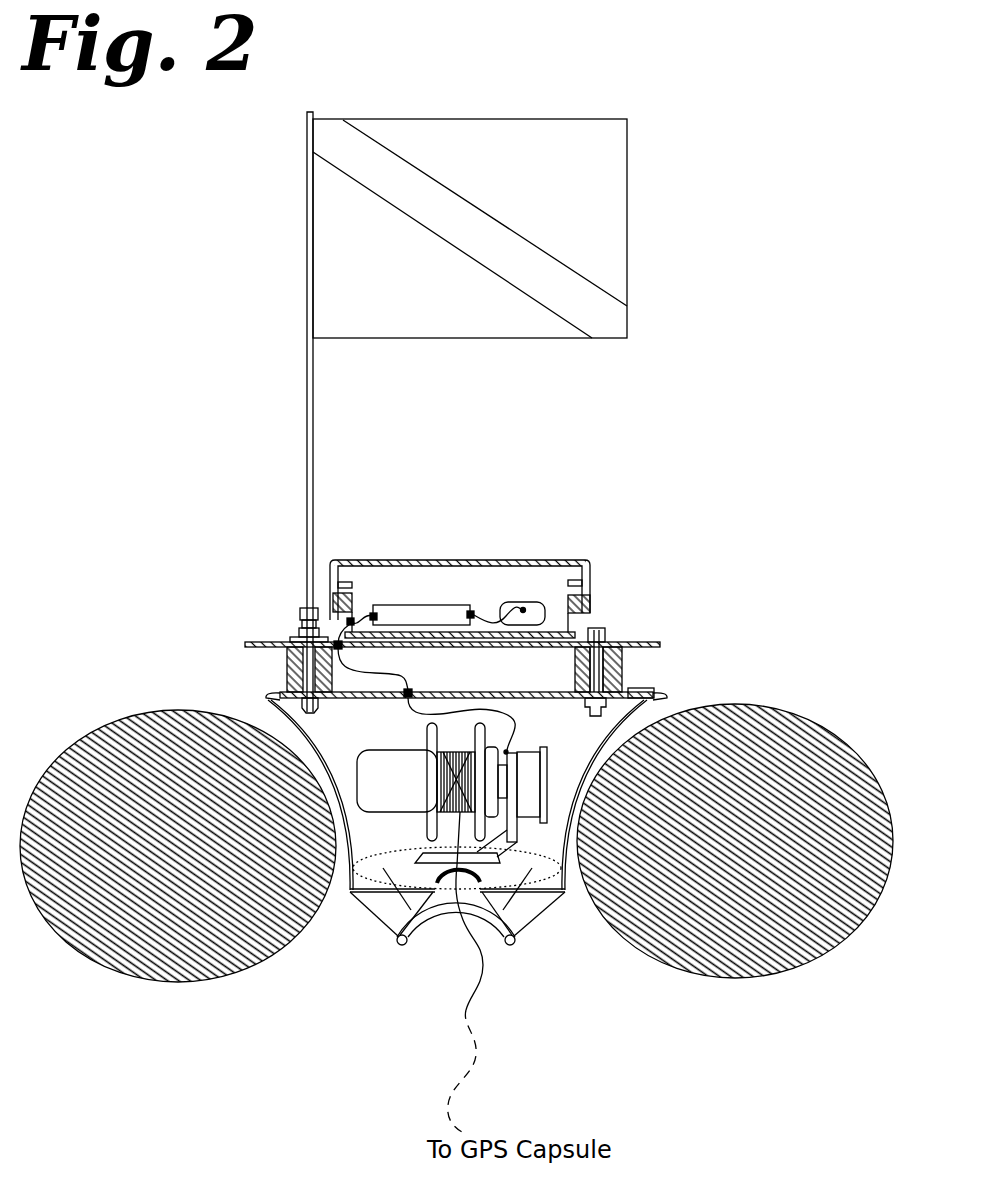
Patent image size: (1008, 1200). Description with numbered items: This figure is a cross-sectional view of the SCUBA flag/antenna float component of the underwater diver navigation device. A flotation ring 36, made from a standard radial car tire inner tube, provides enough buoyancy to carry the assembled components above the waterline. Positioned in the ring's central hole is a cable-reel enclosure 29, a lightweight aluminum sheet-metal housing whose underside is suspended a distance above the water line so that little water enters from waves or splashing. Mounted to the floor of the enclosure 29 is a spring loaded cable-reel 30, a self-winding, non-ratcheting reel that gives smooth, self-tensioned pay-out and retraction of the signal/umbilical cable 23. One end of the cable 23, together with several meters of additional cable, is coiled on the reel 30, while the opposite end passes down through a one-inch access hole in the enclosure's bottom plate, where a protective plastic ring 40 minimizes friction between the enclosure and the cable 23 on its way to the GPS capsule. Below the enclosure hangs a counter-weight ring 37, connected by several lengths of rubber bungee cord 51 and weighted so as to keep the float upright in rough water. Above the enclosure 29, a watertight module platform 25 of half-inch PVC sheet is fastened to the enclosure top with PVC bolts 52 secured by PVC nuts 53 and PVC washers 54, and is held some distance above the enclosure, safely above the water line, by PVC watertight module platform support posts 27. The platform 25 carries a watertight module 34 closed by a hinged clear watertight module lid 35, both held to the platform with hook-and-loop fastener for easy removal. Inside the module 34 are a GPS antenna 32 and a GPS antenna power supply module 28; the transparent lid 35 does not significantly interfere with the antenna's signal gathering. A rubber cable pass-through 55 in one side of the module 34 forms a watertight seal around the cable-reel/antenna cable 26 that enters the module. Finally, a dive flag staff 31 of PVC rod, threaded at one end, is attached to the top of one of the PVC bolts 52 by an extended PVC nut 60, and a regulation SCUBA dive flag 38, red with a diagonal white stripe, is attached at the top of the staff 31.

The Signal/Umbilical Cable 23 is at (483, 955).
The Watertight Module Platform 25 is at (260, 642).
The Cable-reel/Antenna Cable 26 is at (378, 673).
The Watertight Module Platform Support Post 27 is at (285, 665).
The GPS Antenna Power Supply Module 28 is at (405, 603).
The Cable-reel Enclosure 29 is at (347, 877).
The Spring Loaded Cable-reel 30 is at (405, 788).
The Dive Flag Staff 31 is at (302, 408).
The GPS Antenna 32 is at (528, 603).
The Watertight Module 34 is at (592, 602).
The Clear Watertight Module Lid 35 is at (577, 558).
The Flotation ring 36 is at (870, 767).
The Counter-weight ring 37 is at (520, 940).
The SCUBA Dive Flag 38 is at (627, 242).
The Protective Plastic Ring 40 is at (435, 887).
The Bungee Cord 51 is at (537, 920).
The PVC Bolt 52 is at (607, 628).
The PVC Nut 53 is at (632, 689).
The PVC Washer 54 is at (603, 638).
The Rubber Cable Pass-through 55 is at (333, 597).
The Extended PVC Nut 60 is at (302, 617).